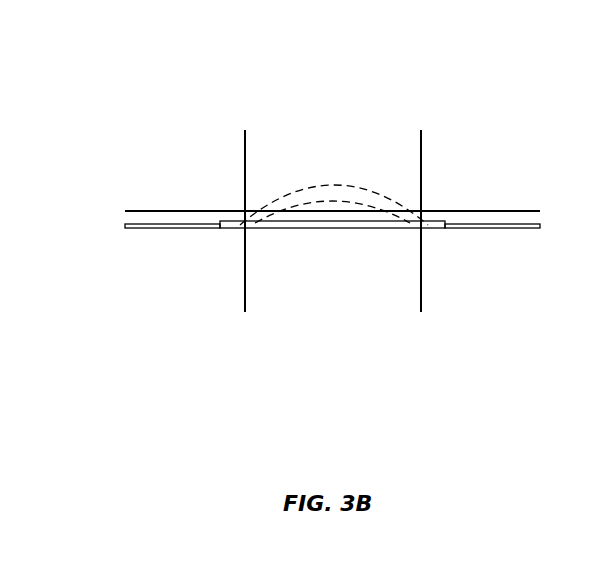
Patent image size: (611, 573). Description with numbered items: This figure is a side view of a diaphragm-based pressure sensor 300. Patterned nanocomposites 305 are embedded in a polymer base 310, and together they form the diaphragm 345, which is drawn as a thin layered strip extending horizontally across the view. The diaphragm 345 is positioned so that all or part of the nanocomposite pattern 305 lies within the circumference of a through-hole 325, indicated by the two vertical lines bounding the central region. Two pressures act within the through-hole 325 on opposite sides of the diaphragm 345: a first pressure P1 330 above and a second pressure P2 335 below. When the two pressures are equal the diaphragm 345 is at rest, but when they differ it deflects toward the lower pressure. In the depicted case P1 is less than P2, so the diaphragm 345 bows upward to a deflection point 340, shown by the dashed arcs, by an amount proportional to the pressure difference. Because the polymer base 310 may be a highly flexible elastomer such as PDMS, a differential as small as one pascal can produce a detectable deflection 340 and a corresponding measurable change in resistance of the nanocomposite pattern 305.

The diaphragm-based pressure sensor 300 is at (309, 224).
The patterned nanocomposite 305 is at (323, 231).
The polymer base 310 is at (218, 208).
The through-hole 325 is at (300, 303).
The first pressure P1 330 is at (283, 112).
The second pressure P2 335 is at (366, 313).
The deflection point 340 is at (338, 201).
The diaphragm 345 is at (121, 223).